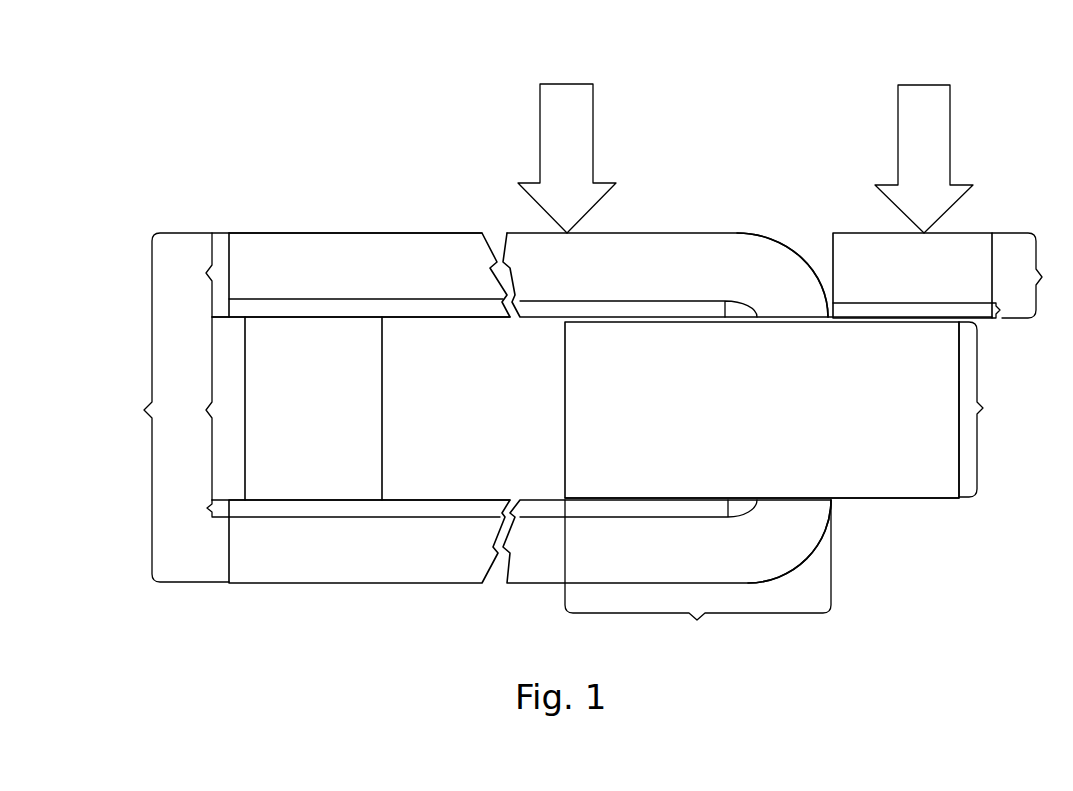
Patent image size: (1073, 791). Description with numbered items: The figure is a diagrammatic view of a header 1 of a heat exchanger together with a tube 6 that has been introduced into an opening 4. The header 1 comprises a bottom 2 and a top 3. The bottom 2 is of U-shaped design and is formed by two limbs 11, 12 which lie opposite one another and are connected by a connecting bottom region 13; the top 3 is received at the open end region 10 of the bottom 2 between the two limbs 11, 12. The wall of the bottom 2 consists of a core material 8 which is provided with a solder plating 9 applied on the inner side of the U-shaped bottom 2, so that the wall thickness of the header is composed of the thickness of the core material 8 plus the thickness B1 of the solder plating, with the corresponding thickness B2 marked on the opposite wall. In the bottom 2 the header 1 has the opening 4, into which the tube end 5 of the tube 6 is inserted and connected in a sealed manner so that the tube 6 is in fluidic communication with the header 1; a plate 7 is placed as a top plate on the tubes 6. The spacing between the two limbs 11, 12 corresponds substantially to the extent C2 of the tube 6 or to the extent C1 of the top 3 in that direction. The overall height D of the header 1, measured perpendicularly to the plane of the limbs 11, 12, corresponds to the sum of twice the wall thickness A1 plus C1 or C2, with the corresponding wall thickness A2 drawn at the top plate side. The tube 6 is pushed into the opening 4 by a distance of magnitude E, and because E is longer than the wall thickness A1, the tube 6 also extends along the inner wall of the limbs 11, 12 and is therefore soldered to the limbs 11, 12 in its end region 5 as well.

The header 1 is at (739, 232).
The bottom 2 is at (690, 240).
The top 3 is at (372, 430).
The opening 4 is at (834, 500).
The tube end 5 is at (565, 425).
The tube 6 is at (890, 490).
The plate 7 is at (975, 242).
The core material 8 is at (433, 238).
The solder plating 9 is at (338, 308).
The open end region 10 is at (355, 560).
The limb 11 is at (262, 247).
The limb 12 is at (280, 565).
The connecting bottom region 13 is at (780, 258).
The wall thickness of the header A1 is at (203, 275).
The wall thickness A2 is at (1032, 275).
The thickness of the solder plating B1 is at (203, 510).
The thickness of the solder plating B2 is at (1011, 310).
The extent of the top C1 is at (194, 408).
The extent of the tube C2 is at (991, 409).
The overall height of the header D is at (176, 407).
The insertion distance E is at (698, 575).